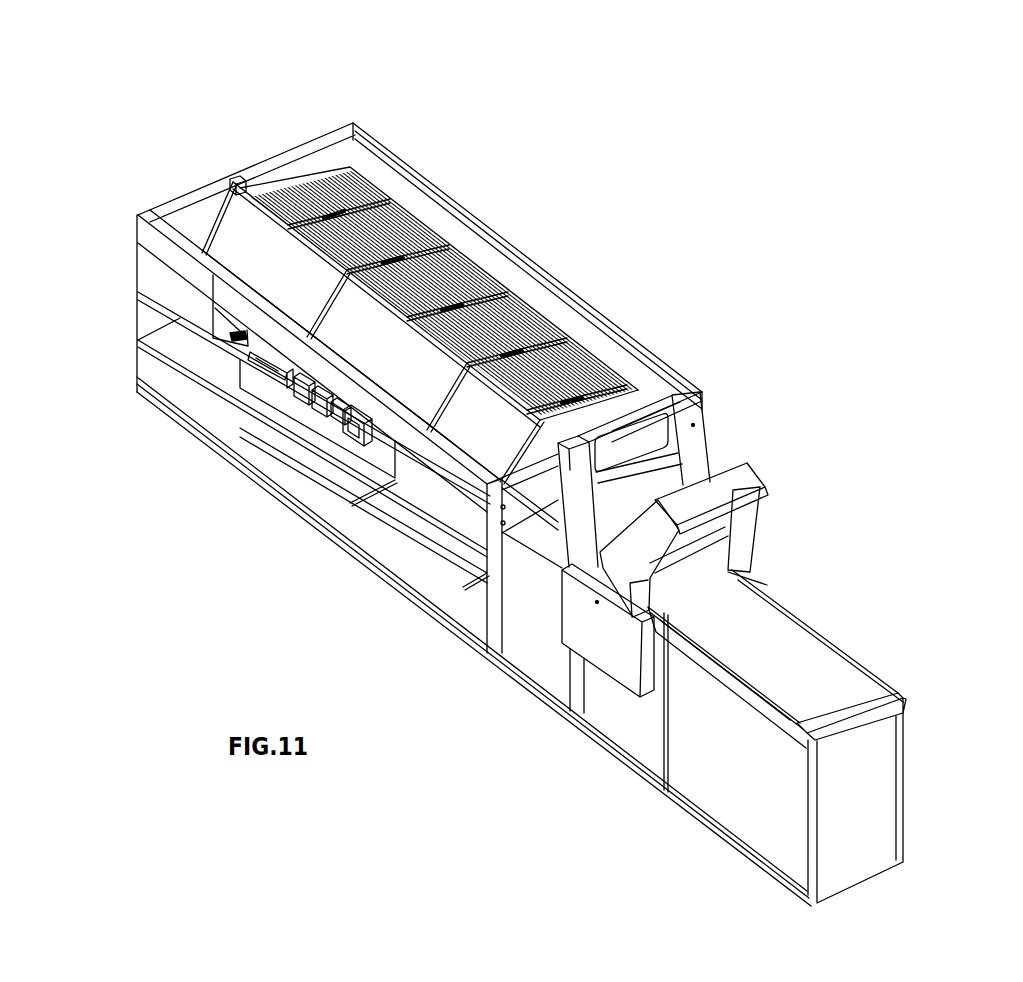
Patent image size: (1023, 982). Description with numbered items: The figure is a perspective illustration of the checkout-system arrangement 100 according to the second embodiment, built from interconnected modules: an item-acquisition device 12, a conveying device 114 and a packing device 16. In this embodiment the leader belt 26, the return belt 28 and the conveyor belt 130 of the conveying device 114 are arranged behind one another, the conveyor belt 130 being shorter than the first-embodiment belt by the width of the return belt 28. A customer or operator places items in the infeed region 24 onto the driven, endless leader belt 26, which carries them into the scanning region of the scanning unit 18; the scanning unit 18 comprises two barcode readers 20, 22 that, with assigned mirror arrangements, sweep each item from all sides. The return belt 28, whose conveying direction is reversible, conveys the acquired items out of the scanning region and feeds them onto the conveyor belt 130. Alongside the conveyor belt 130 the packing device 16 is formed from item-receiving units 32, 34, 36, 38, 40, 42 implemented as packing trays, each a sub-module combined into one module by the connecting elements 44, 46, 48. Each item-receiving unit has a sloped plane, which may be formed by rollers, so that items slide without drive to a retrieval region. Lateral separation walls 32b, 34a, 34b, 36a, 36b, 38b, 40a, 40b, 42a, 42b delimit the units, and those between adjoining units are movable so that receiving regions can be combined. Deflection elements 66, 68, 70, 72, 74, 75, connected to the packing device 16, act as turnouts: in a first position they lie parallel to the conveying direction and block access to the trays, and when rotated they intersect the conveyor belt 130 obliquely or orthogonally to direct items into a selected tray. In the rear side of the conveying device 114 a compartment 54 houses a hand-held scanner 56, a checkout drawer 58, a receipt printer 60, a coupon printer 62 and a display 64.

The checkout-system arrangement 100 is at (910, 192).
The item-acquisition device 12 is at (880, 566).
The conveying device 114 is at (141, 185).
The packing device 16 is at (618, 228).
The scanning unit 18 is at (744, 438).
The barcode reader 20 is at (665, 412).
The barcode reader 22 is at (747, 467).
The infeed region 24 is at (846, 651).
The leader belt 26 is at (806, 683).
The return belt 28 is at (555, 499).
The item-receiving unit 32 is at (628, 400).
The separation wall 32b is at (660, 392).
The item-receiving unit 34 is at (603, 390).
The separation wall 34a is at (640, 367).
The separation wall 34b is at (615, 342).
The item-receiving unit 36 is at (553, 345).
The separation wall 36a is at (580, 340).
The separation wall 36b is at (537, 307).
The item-receiving unit 38 is at (488, 290).
The separation wall 38b is at (480, 255).
The item-receiving unit 40 is at (442, 243).
The separation wall 40a is at (455, 258).
The separation wall 40b is at (432, 240).
The item-receiving unit 42 is at (345, 172).
The separation wall 42a is at (405, 205).
The separation wall 42b is at (360, 130).
The connecting element 44 is at (556, 234).
The connecting element 46 is at (302, 145).
The connecting element 48 is at (693, 412).
The compartment 54 is at (393, 458).
The hand-held scanner 56 is at (238, 342).
The checkout drawer 58 is at (262, 365).
The printer 60 is at (300, 387).
The printer 62 is at (325, 410).
The display 64 is at (347, 430).
The deflection element 66 is at (224, 223).
The deflection element 68 is at (307, 258).
The deflection element 70 is at (322, 316).
The deflection element 72 is at (427, 348).
The deflection element 74 is at (477, 388).
The deflection element 75 is at (540, 427).
The conveyor belt 130 is at (386, 366).